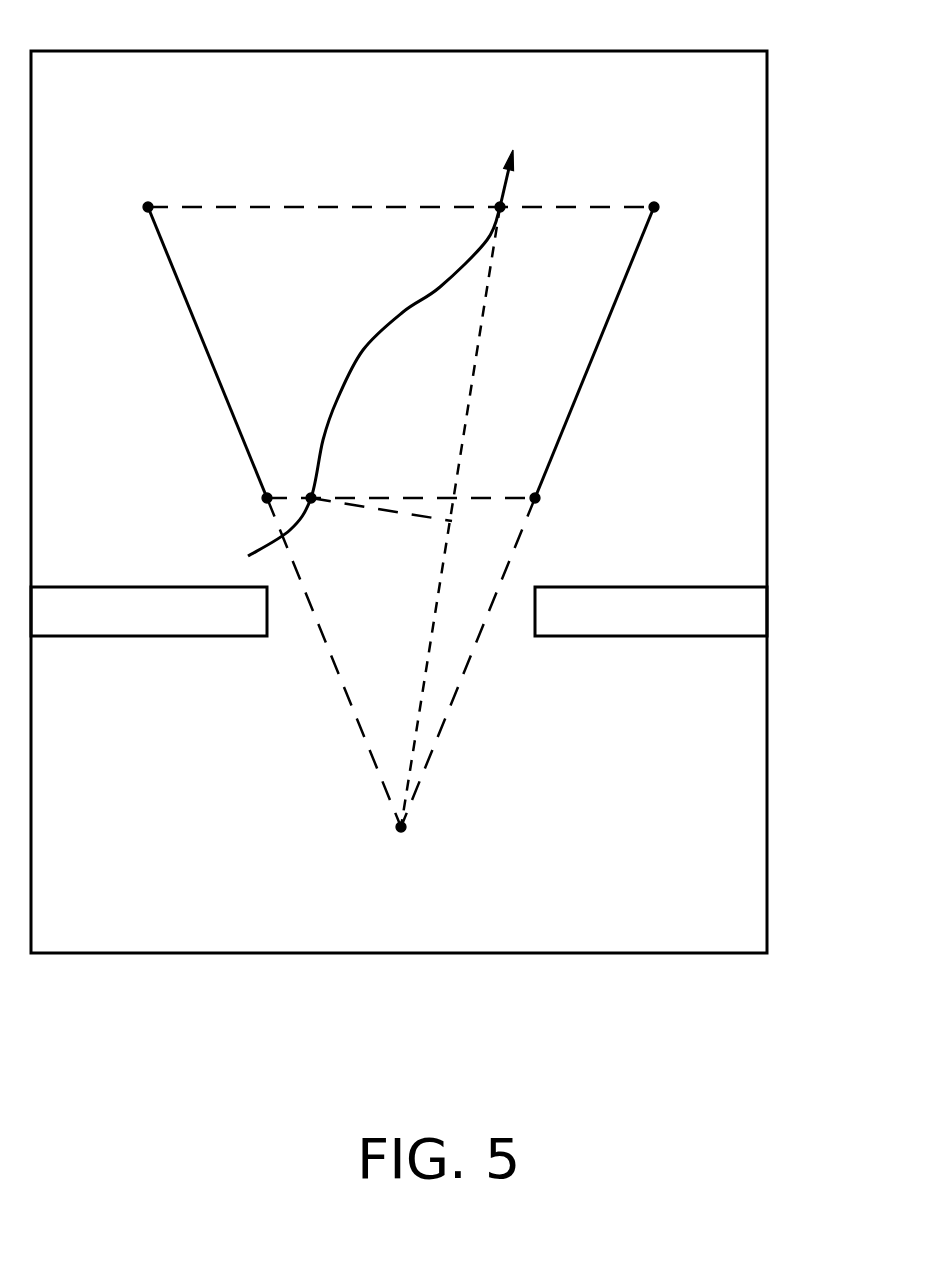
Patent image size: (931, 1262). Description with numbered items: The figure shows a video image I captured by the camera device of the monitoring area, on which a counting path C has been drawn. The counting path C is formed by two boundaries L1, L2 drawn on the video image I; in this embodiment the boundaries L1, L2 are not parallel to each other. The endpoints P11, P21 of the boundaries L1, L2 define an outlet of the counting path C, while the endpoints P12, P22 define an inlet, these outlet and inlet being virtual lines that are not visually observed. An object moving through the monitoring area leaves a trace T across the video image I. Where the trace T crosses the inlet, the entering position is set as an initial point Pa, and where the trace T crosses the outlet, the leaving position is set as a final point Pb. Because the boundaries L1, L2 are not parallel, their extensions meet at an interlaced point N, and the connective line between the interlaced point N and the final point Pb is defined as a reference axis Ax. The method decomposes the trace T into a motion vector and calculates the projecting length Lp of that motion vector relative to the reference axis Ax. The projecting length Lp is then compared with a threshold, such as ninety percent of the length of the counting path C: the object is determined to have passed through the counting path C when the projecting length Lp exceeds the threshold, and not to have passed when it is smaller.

The video image I is at (715, 51).
The counting path C is at (242, 240).
The endpoint P11 is at (120, 207).
The endpoint P12 is at (240, 498).
The endpoint P21 is at (683, 207).
The endpoint P22 is at (565, 498).
The initial point Pa is at (322, 520).
The final point Pb is at (482, 192).
The trace T is at (512, 164).
The boundary L1 is at (188, 303).
The boundary L2 is at (615, 304).
The projecting length Lp is at (503, 210).
The reference axis Ax is at (401, 662).
The interlaced point N is at (415, 831).